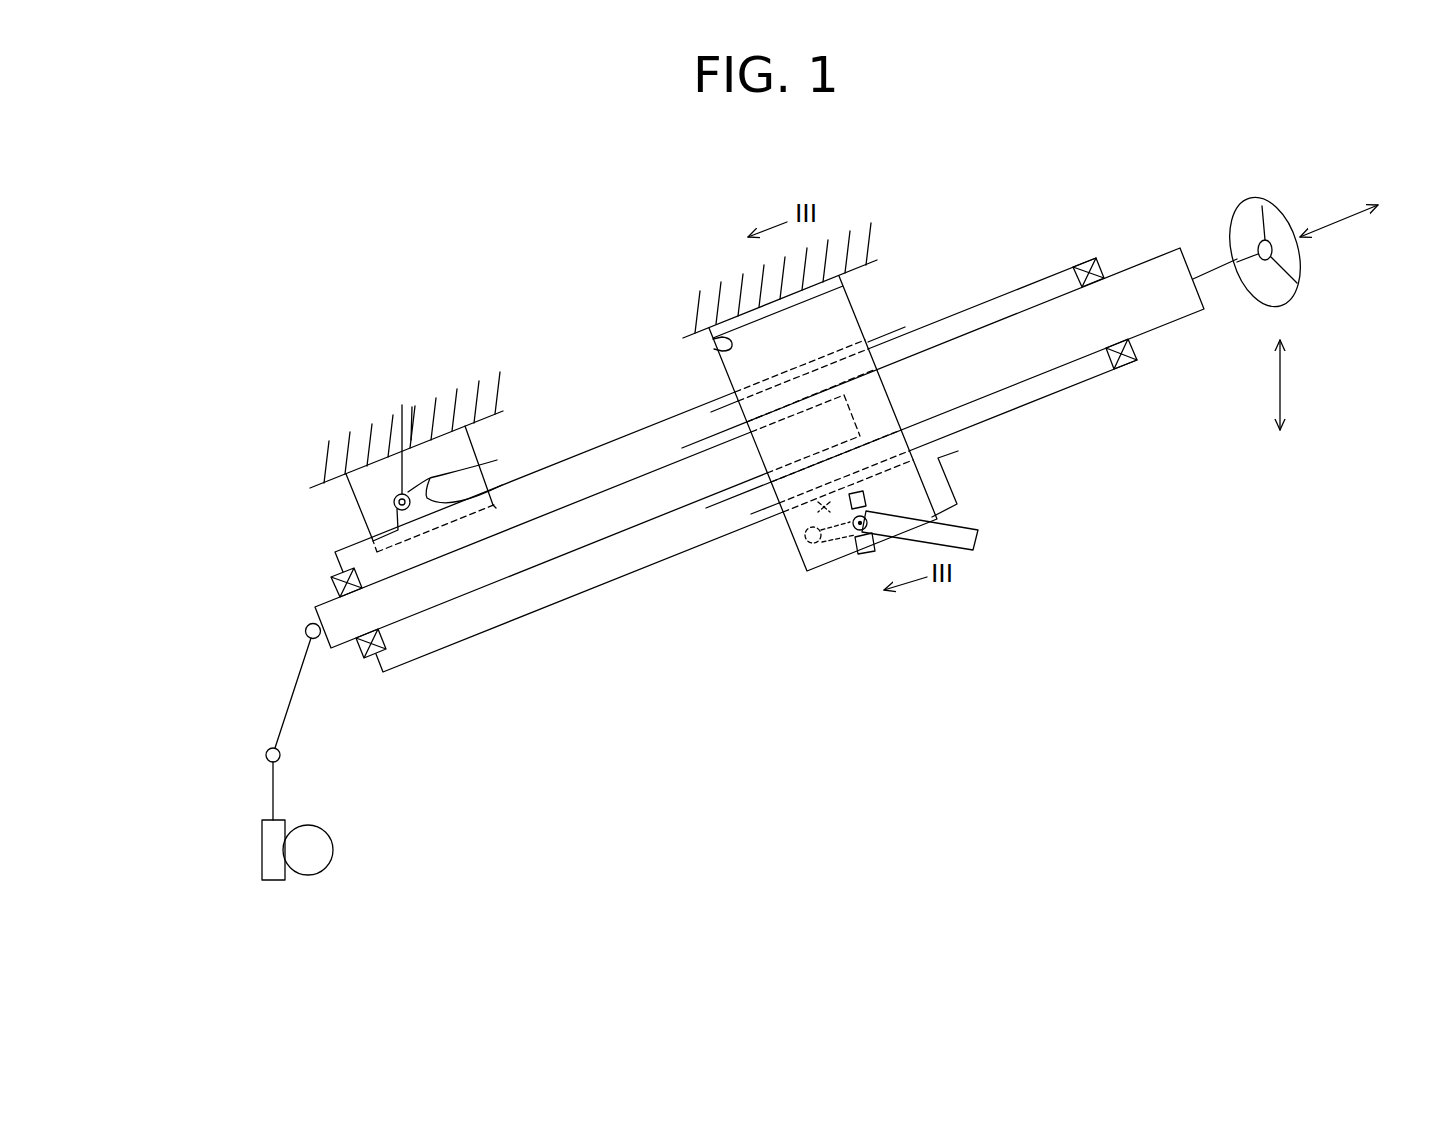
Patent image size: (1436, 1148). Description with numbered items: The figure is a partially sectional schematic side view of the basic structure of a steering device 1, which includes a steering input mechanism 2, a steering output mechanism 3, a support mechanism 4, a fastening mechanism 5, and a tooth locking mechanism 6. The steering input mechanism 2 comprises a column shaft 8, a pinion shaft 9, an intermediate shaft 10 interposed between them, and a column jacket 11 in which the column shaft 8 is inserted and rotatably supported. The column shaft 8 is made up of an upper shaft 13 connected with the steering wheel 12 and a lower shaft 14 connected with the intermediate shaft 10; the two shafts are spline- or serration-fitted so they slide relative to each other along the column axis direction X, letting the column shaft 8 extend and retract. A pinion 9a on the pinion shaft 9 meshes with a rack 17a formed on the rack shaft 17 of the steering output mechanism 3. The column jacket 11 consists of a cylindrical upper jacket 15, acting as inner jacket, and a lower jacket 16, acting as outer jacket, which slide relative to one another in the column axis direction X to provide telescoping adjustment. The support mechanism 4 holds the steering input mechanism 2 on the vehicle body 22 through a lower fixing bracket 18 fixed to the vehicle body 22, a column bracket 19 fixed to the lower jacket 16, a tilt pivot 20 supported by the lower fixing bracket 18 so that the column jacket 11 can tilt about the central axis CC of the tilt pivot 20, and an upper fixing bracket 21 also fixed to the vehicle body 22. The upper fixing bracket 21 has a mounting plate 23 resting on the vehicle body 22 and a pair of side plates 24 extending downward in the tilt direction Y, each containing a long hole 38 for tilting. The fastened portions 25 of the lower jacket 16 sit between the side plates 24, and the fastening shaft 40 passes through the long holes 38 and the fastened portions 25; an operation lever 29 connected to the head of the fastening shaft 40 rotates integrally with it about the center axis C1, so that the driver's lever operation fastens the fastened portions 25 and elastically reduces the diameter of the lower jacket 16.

The steering device 1 is at (528, 285).
The steering input mechanism 2 is at (1211, 272).
The steering output mechanism 3 is at (318, 818).
The support mechanism 4 is at (867, 297).
The fastening mechanism 5 is at (993, 520).
The tooth locking mechanism 6 is at (808, 548).
The column shaft 8 is at (1138, 262).
The pinion shaft 9 is at (272, 791).
The pinion 9a is at (272, 882).
The intermediate shaft 10 is at (292, 693).
The column jacket 11 is at (1005, 291).
The steering wheel 12 is at (1247, 197).
The upper shaft 13 is at (1188, 325).
The lower shaft 14 is at (468, 600).
The upper jacket 15 is at (945, 317).
The lower jacket 16 is at (612, 440).
The rack shaft 17 is at (318, 876).
The rack 17a is at (262, 855).
The lower fixing bracket 18 is at (468, 443).
The column bracket 19 is at (497, 460).
The tilt pivot 20 is at (394, 506).
The upper fixing bracket 21 is at (722, 371).
The vehicle body 22 is at (702, 308).
The mounting plate 23 is at (713, 344).
The side plate 24 is at (812, 568).
The fastened portion 25 is at (755, 520).
The operation lever 29 is at (977, 540).
The long hole for tilting 38 is at (860, 555).
The fastening shaft 40 is at (958, 454).
The center axis of the shaft portion of the fastening shaft C1 is at (864, 495).
The central axis of the tilt pivot CC is at (405, 432).
The column axis direction X is at (1342, 226).
The tilt direction Y is at (1282, 385).